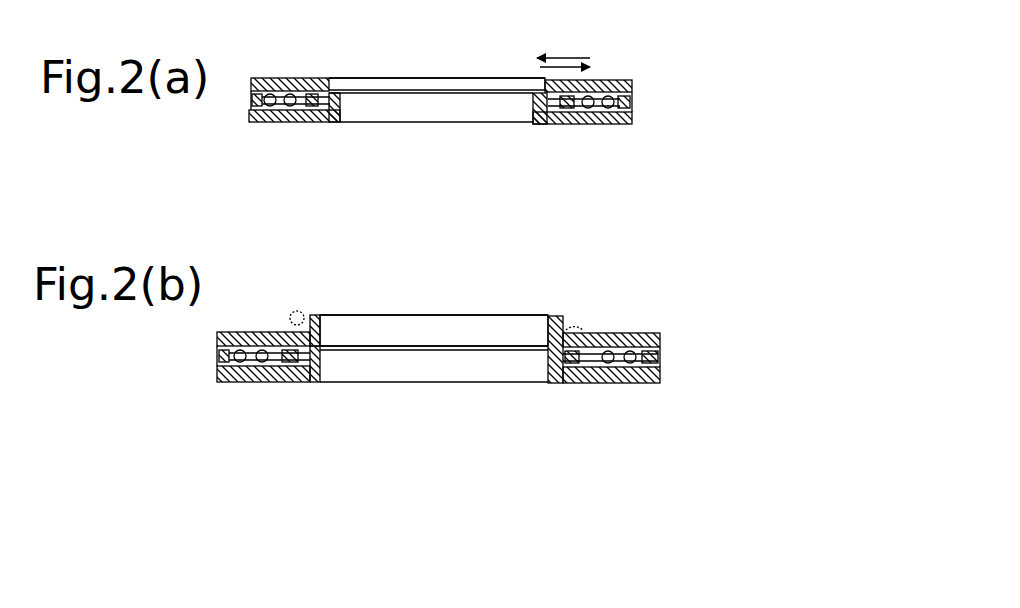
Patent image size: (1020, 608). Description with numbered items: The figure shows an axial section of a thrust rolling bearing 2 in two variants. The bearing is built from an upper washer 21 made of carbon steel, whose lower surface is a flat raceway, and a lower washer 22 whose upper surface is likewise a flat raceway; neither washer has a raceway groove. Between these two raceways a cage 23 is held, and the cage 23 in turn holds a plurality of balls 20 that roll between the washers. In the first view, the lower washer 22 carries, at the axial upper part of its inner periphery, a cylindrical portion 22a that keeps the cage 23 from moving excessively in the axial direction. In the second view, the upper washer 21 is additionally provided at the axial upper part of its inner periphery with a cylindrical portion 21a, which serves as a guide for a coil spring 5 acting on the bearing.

In FIG. 2A, the thrust rolling bearing 2 is at (583, 42).
In FIG. 2B, the thrust rolling bearing 2 is at (461, 314).
In FIG. 2B, the coil spring 5 is at (290, 312).
In FIG. 2A, the balls 20 is at (618, 80).
In FIG. 2B, the balls 20 is at (622, 332).
In FIG. 2A, the upper washer 21 is at (461, 78).
In FIG. 2B, the upper washer 21 is at (522, 318).
In FIG. 2B, the cylindrical portion 21a is at (322, 315).
In FIG. 2A, the lower washer 22 is at (553, 125).
In FIG. 2B, the lower washer 22 is at (567, 384).
In FIG. 2A, the cylindrical portion 22a is at (340, 123).
In FIG. 2B, the cylindrical portion 22a is at (322, 370).
In FIG. 2A, the cage 23 is at (632, 103).
In FIG. 2B, the cage 23 is at (660, 357).